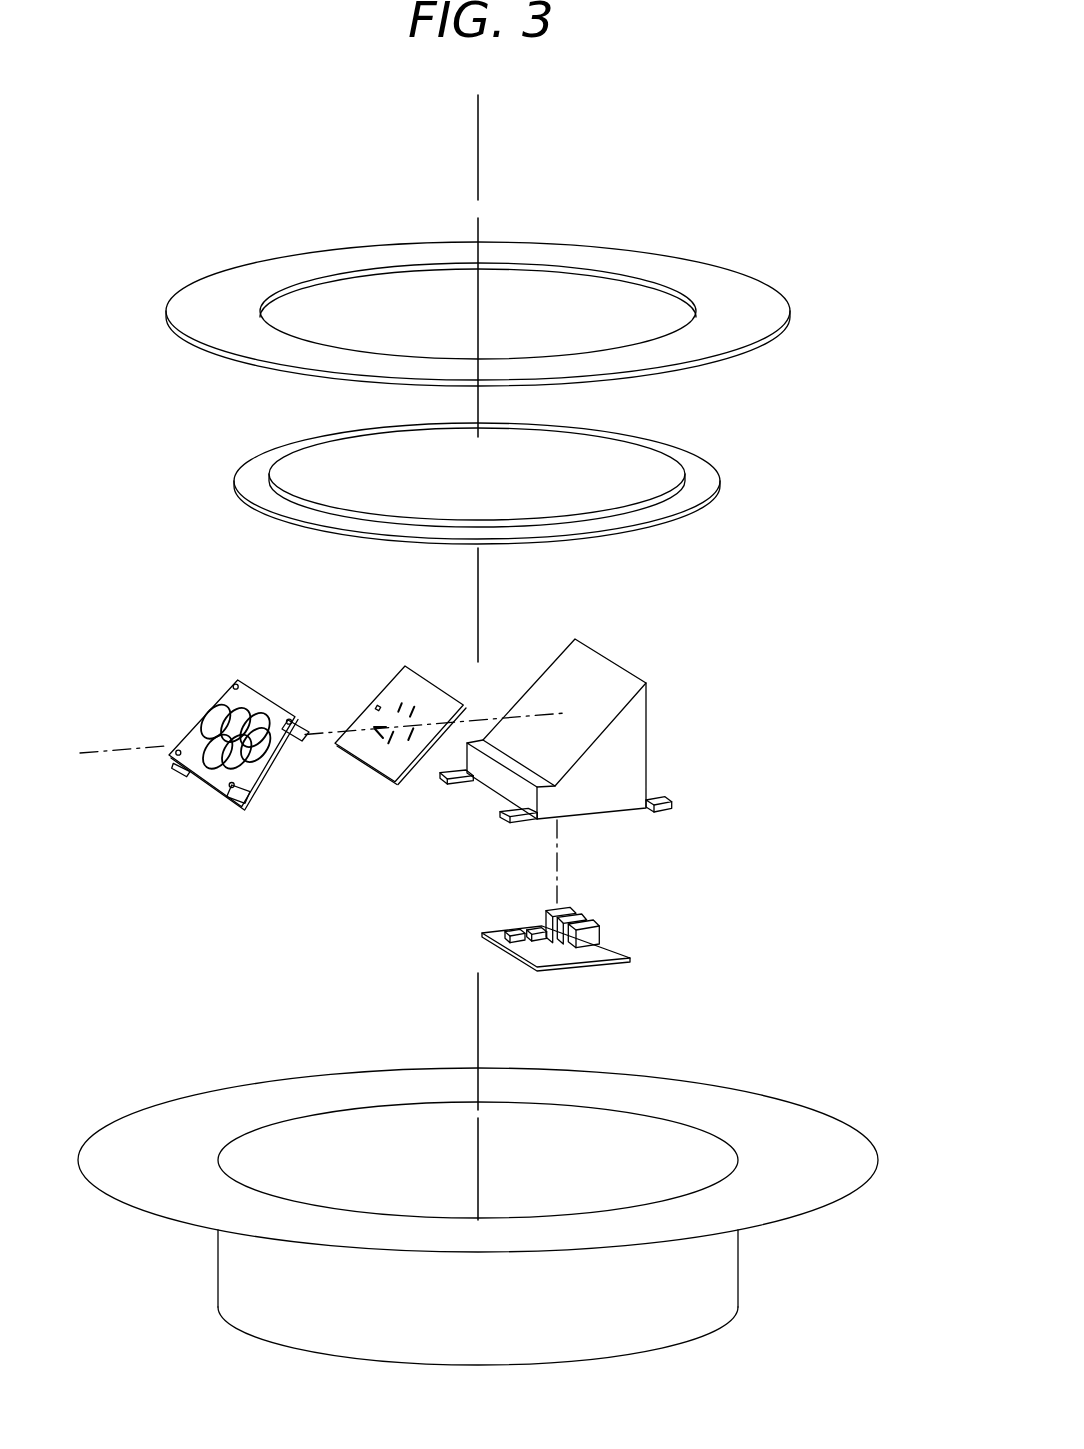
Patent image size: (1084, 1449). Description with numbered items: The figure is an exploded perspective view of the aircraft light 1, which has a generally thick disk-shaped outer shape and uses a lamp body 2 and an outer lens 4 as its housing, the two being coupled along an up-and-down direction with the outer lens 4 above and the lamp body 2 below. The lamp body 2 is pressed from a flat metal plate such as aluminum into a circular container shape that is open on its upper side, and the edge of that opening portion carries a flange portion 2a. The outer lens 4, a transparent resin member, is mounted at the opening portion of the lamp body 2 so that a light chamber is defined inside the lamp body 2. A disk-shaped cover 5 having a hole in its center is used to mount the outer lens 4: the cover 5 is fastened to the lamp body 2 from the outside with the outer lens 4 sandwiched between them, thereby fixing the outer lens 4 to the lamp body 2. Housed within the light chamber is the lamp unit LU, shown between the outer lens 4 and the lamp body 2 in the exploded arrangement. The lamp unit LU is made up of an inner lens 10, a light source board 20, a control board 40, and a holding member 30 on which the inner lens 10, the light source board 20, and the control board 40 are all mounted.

The aircraft light 1 is at (142, 181).
The lamp body 2 is at (511, 1216).
The flange portion 2a is at (848, 1191).
The outer lens 4 is at (723, 490).
The cover 5 is at (792, 326).
The inner lens 10 is at (257, 772).
The light source board 20 is at (365, 760).
The holding member 30 is at (480, 787).
The control board 40 is at (523, 893).
The lamp unit LU is at (376, 805).